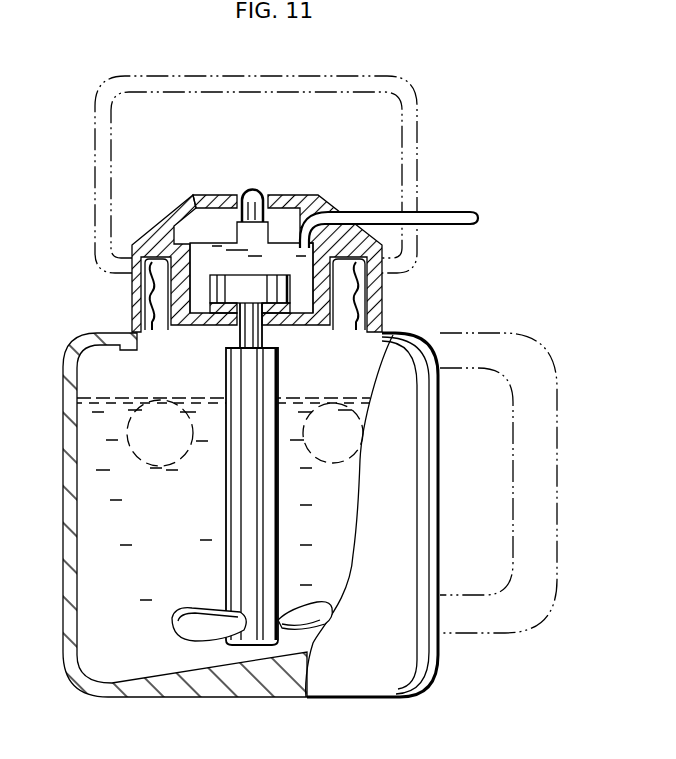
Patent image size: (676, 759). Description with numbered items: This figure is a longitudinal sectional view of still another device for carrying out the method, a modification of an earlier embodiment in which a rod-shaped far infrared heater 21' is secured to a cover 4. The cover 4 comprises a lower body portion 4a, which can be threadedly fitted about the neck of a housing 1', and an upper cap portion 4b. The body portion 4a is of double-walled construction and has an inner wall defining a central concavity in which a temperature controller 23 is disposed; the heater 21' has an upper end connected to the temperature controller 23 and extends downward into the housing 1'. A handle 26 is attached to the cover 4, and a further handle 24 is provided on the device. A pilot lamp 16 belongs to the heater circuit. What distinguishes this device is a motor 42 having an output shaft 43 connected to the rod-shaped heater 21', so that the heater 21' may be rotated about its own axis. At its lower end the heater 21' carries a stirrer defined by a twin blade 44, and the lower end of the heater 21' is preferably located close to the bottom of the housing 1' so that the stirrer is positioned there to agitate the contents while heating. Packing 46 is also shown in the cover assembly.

The handle 26 is at (385, 80).
The handle 24 is at (545, 537).
The housing 1' is at (231, 515).
The cover 4 is at (130, 292).
The lower body portion 4a is at (372, 316).
The upper cap portion 4b is at (228, 196).
The temperature controller 23 is at (212, 252).
The pilot lamp 16 is at (260, 195).
The motor 42 is at (292, 287).
The packing 46 is at (277, 324).
The output shaft 43 is at (237, 338).
The rod-shaped far infrared heater 21' is at (221, 496).
The twin blade 44 is at (200, 623).